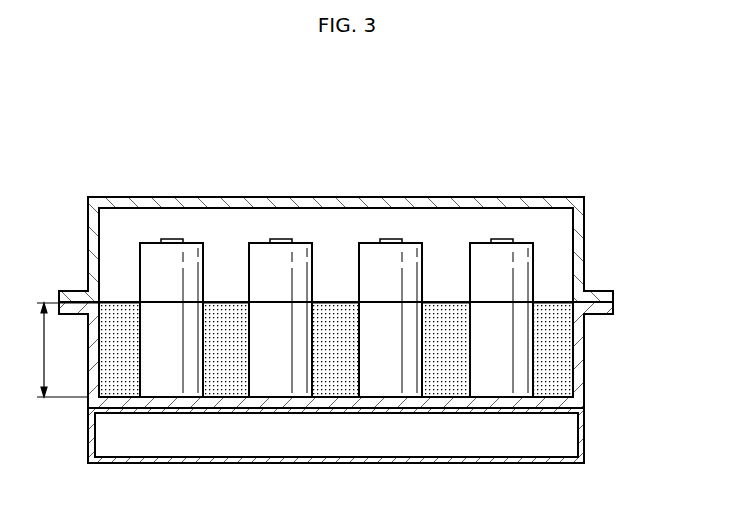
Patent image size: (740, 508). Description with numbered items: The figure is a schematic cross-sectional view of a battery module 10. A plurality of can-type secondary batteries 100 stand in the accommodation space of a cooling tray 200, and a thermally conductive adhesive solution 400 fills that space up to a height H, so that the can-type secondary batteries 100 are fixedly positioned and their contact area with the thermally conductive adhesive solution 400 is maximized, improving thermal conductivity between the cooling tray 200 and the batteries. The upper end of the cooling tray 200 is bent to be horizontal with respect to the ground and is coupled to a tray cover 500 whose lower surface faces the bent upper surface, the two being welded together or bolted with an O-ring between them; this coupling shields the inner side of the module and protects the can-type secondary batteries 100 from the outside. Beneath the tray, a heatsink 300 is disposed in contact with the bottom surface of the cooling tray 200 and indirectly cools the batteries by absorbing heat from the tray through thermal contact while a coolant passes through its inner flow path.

The battery module 10 is at (181, 96).
The can-type secondary batteries 100 is at (302, 242).
The cooling tray 200 is at (591, 340).
The heatsink 300 is at (585, 437).
The thermally conductive adhesive solution 400 is at (558, 378).
The tray cover 500 is at (473, 186).